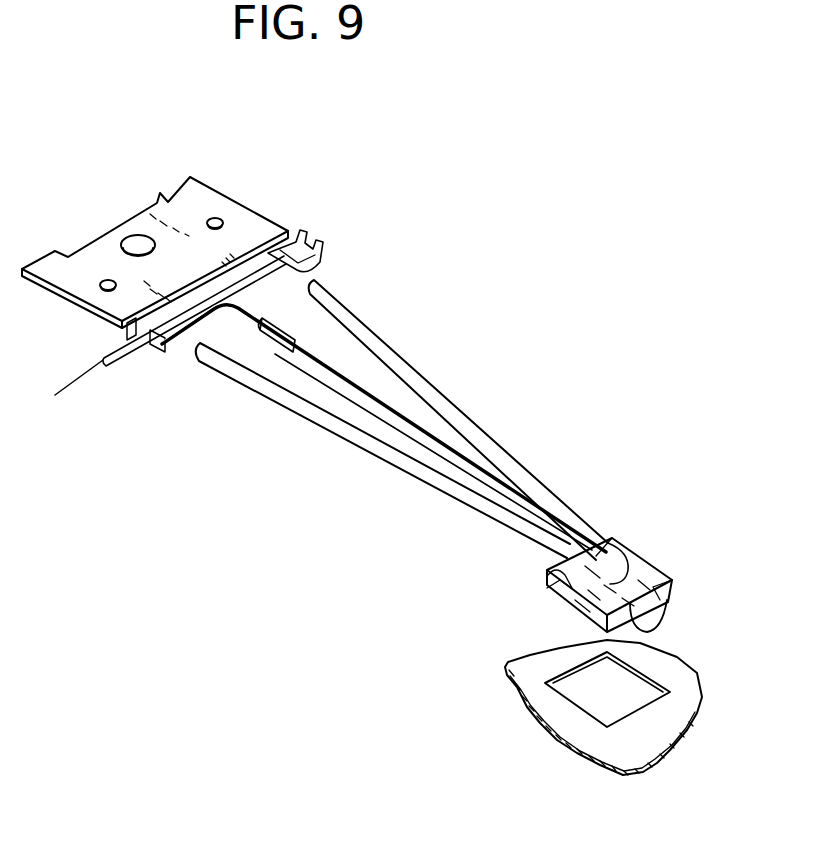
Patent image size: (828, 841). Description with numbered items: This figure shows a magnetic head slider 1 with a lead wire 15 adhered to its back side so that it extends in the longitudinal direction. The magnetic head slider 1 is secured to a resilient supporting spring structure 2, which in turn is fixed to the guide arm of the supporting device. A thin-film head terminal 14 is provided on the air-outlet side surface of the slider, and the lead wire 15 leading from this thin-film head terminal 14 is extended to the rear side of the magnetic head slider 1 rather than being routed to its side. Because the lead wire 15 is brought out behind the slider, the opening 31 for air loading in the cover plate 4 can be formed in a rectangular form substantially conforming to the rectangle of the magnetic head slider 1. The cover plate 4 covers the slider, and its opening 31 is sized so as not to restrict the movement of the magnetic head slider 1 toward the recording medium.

The magnetic head slider 1 is at (562, 615).
The resilient supporting spring structure 2 is at (243, 382).
The cover plate 4 is at (523, 672).
The thin-film head terminal 14 is at (547, 590).
The lead wire 15 is at (658, 617).
The opening 31 is at (621, 700).